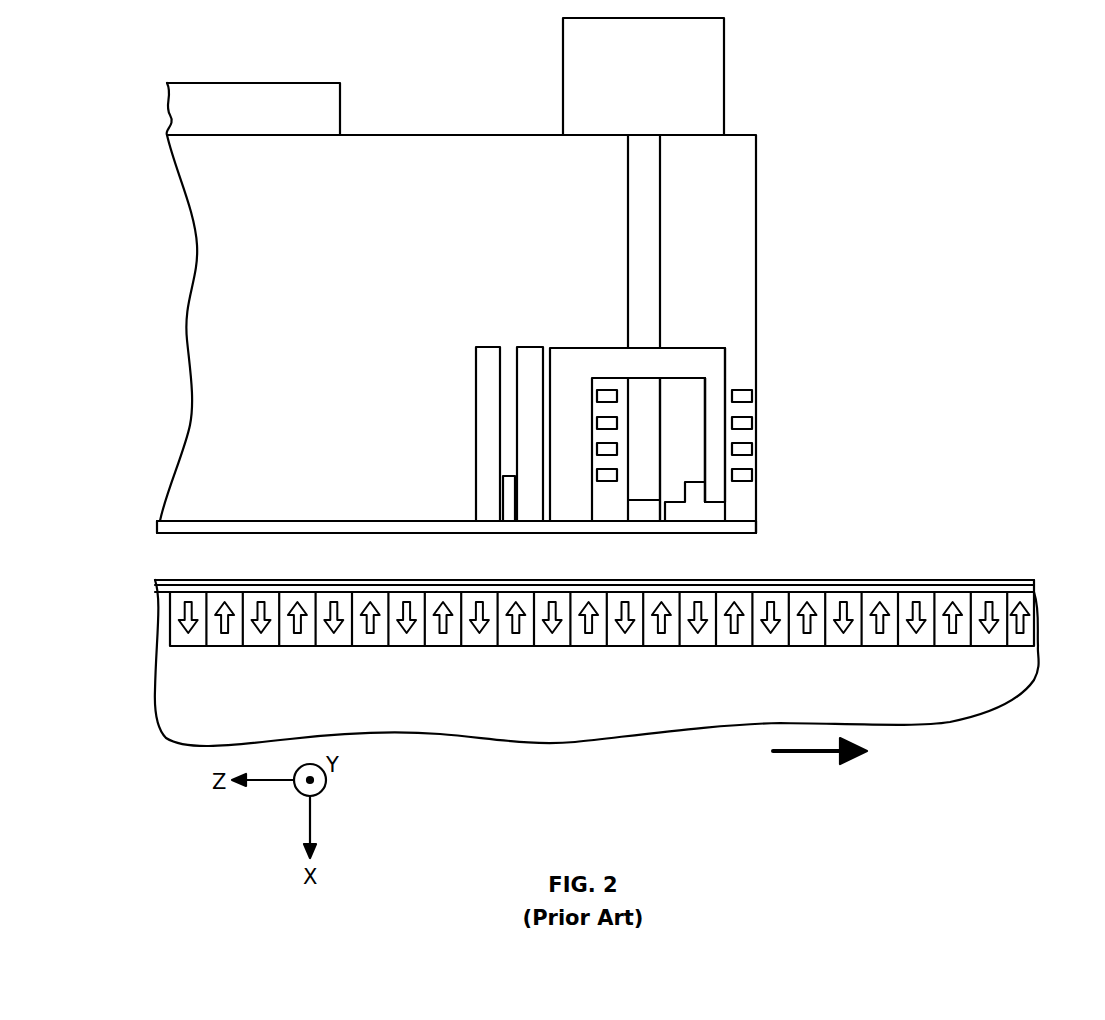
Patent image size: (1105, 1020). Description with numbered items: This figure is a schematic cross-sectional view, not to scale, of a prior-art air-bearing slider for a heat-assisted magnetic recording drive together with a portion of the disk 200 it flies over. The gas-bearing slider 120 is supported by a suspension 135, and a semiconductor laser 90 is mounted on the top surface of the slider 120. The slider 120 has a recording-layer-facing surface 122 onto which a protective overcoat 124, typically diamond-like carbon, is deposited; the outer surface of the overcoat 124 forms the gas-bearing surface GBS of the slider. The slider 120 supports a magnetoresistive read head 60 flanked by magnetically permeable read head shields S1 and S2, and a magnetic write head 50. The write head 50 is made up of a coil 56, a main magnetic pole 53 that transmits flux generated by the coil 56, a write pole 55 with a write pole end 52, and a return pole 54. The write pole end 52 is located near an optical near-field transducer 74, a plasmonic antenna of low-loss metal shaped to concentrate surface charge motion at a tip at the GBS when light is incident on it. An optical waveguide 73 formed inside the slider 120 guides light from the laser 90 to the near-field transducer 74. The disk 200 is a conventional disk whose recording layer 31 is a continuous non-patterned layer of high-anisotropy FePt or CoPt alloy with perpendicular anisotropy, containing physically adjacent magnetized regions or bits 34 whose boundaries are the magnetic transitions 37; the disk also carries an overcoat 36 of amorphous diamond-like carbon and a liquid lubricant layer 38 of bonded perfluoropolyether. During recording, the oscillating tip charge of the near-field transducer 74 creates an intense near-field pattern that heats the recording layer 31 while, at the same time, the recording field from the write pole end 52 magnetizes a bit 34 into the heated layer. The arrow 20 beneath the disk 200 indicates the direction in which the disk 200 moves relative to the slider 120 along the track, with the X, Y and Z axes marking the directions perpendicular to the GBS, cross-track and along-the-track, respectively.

The gas-bearing slider 120 is at (205, 408).
The suspension 135 is at (330, 87).
The semiconductor laser 90 is at (712, 76).
The optical waveguide 73 is at (643, 290).
The recording-layer-facing surface 122 is at (275, 520).
The protective overcoat 124 is at (312, 536).
The gas-bearing surface GBS is at (737, 540).
The magnetic write head 50 is at (566, 281).
The read head shield S1 is at (487, 433).
The read head shield S2 is at (530, 347).
The magnetoresistive read head 60 is at (503, 505).
The return pole 54 is at (570, 357).
The main magnetic pole 53 is at (718, 372).
The coil 56 is at (592, 383).
The optical near-field transducer 74 is at (641, 498).
The write pole end 52 is at (673, 500).
The write pole 55 is at (693, 512).
The disk 200 is at (917, 712).
The liquid lubricant layer 38 is at (858, 580).
The overcoat 36 is at (928, 590).
The recording layer 31 is at (562, 625).
The magnetic transitions 37 is at (933, 648).
The bits 34 is at (988, 603).
The direction of media motion 20 is at (810, 752).